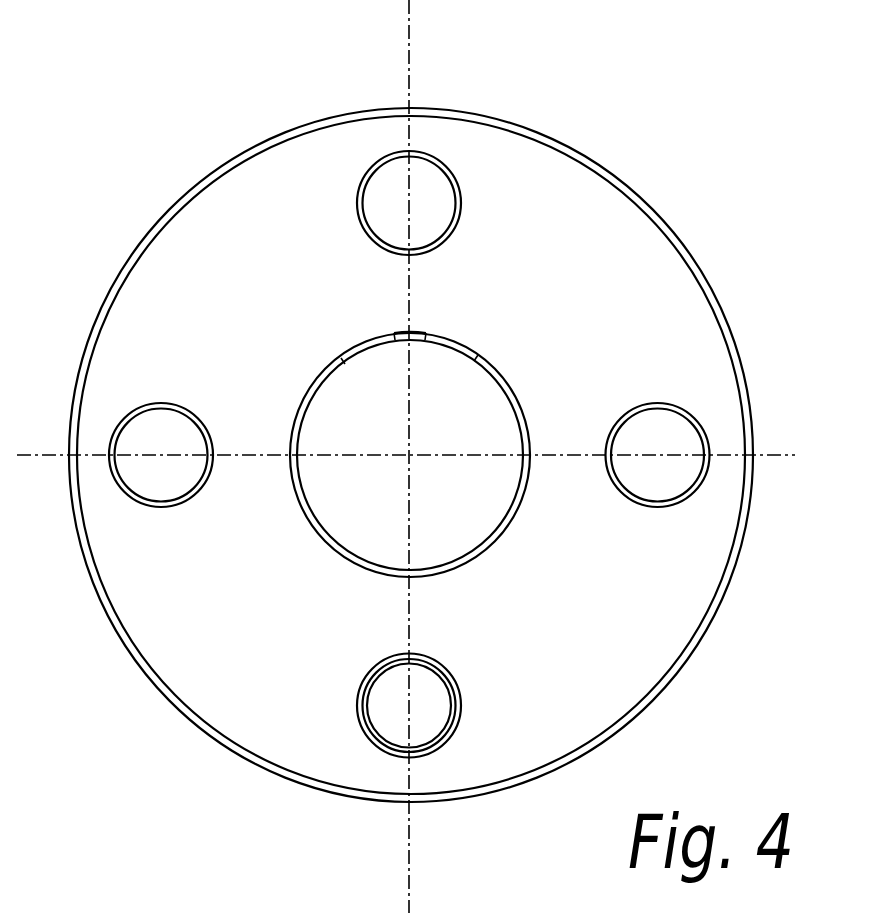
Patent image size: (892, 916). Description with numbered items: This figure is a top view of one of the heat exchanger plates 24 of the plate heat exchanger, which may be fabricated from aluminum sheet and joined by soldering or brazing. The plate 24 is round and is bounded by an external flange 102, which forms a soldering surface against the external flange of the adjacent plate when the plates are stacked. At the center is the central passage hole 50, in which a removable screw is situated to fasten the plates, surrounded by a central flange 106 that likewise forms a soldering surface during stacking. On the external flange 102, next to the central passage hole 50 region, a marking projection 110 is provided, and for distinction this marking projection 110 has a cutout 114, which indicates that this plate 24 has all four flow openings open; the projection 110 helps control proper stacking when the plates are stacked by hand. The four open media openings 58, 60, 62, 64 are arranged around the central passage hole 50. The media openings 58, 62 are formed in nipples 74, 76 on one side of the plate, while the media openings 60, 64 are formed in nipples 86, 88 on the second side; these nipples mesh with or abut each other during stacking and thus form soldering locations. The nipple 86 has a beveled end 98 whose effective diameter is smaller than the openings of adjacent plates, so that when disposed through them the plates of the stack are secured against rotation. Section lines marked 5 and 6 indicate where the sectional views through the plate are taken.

The heat exchanger plate 24 is at (608, 130).
The external flange 102 is at (677, 238).
The central passage hole 50 is at (432, 417).
The central flange 106 is at (495, 367).
The marking projection 110 is at (463, 342).
The cutout 114 is at (410, 335).
The media opening 64 is at (433, 195).
The nipple 88 is at (462, 197).
The media opening 58 is at (180, 438).
The nipple 74 is at (168, 403).
The media opening 62 is at (687, 448).
The nipple 76 is at (672, 405).
The media opening 60 is at (380, 707).
The beveled end 98 is at (445, 682).
The nipple 86 is at (458, 723).
The section line 6- 6 is at (406, 855).
The section line 5- 5 is at (778, 460).